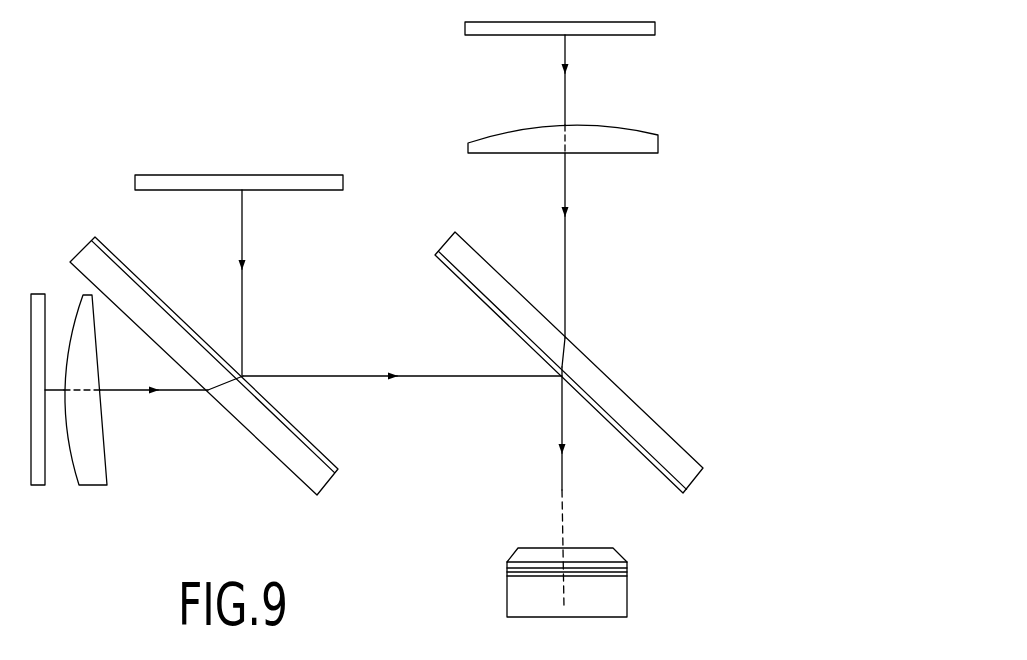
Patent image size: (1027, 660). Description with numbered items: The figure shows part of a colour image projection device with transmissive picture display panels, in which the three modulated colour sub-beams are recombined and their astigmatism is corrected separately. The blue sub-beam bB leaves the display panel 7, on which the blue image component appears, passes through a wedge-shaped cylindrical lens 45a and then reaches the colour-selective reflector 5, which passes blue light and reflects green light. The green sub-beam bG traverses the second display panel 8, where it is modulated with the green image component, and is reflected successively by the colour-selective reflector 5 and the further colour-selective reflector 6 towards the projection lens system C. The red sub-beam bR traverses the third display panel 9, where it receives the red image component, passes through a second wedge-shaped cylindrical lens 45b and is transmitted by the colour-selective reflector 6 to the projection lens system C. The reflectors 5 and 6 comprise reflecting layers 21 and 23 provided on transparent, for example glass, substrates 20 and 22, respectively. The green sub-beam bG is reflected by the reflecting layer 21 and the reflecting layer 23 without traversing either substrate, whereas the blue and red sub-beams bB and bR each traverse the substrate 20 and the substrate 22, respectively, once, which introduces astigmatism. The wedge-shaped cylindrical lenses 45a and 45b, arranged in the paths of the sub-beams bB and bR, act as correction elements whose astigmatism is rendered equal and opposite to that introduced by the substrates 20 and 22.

The colour-selective reflector 5 is at (215, 371).
The further colour-selective reflector 6 is at (576, 366).
The display panel 7 is at (38, 486).
The second display panel 8 is at (343, 181).
The third display panel 9 is at (655, 27).
The substrate 20 is at (322, 480).
The reflecting layer 21 is at (339, 470).
The substrate 22 is at (688, 469).
The reflecting layer 23 is at (672, 483).
The wedge-shaped cylindrical lens 45a is at (95, 486).
The wedge-shaped cylindrical lens 45b is at (658, 147).
The projection lens system C is at (633, 589).
The blue sub-beam bB is at (303, 400).
The green sub-beam bG is at (259, 283).
The red sub-beam bR is at (582, 321).